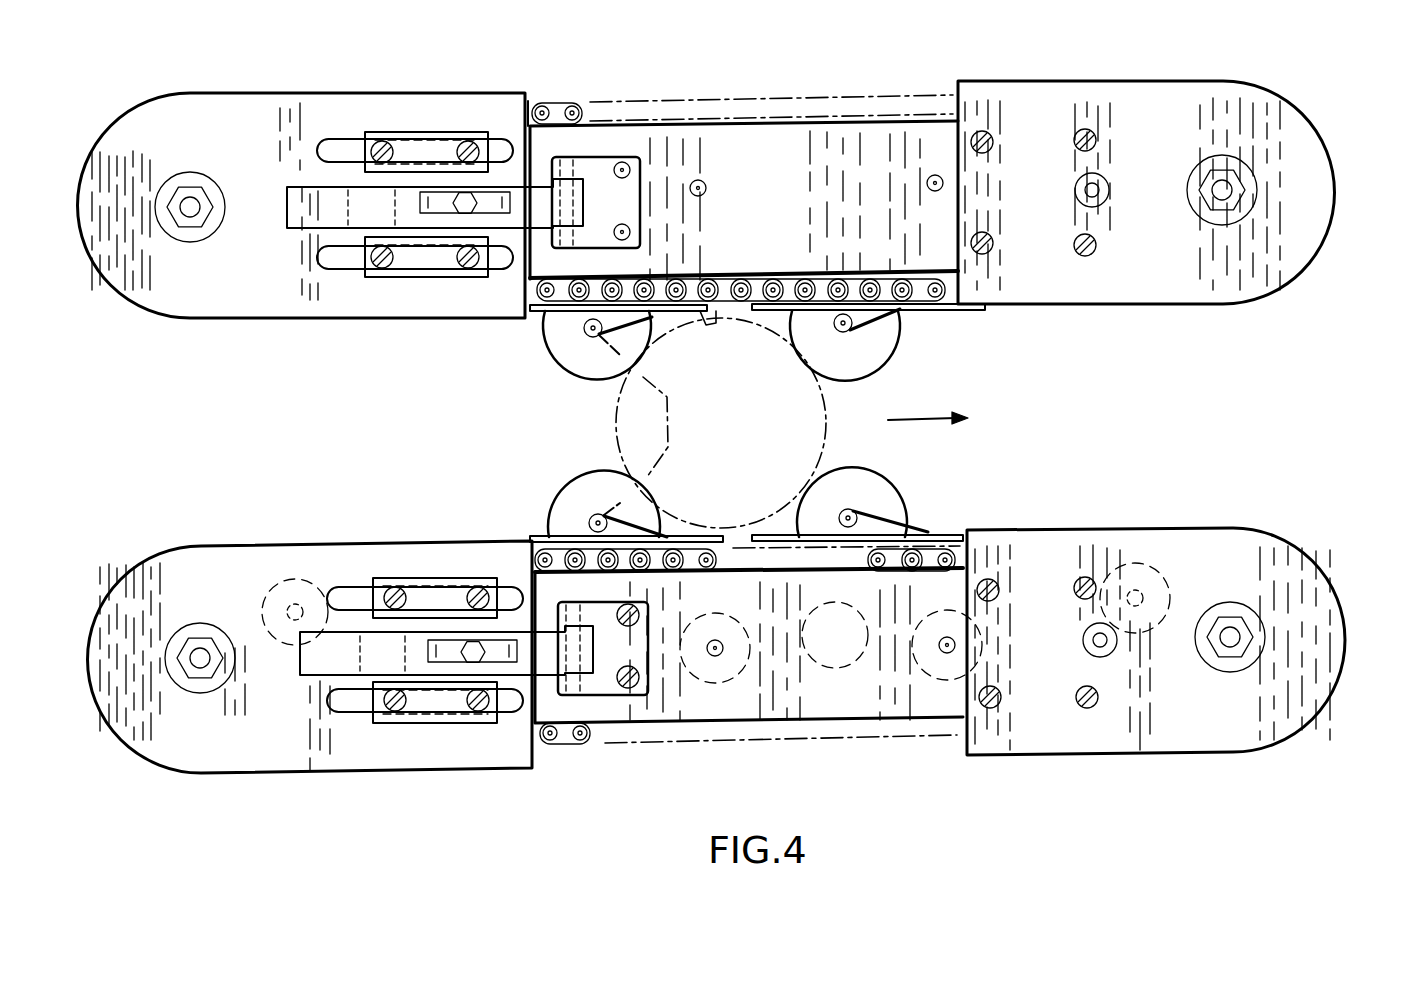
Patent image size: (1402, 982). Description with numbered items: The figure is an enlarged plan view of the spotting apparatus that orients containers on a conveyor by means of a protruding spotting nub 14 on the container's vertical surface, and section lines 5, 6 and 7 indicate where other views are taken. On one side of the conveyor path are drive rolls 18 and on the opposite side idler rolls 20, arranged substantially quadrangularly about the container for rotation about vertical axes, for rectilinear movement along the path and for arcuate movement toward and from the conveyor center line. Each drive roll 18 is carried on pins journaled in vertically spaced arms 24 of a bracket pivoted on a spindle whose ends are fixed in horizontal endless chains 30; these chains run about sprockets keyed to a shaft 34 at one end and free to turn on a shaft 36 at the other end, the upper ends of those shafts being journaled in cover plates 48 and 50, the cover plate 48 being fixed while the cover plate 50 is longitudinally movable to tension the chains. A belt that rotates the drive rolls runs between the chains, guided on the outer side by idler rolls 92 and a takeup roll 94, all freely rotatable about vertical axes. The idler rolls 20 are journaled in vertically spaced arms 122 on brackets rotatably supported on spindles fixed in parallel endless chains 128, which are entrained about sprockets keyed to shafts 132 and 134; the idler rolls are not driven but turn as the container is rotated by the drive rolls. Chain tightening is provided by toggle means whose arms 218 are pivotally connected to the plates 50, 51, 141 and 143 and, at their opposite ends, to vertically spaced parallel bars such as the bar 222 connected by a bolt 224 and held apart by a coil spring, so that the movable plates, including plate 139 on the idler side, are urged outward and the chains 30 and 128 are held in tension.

The section line 5- 5 is at (556, 72).
The section line 6- 6 is at (60, 640).
The section line 7- 7 is at (52, 194).
The spotting nub 14 is at (722, 322).
The drive rolls 18 is at (550, 482).
The idler rolls 20 is at (548, 368).
The arms 24 is at (850, 509).
The endless chains 30 is at (897, 567).
The shaft 34 is at (1228, 642).
The shaft 36 is at (203, 655).
The cover plate 48 is at (1038, 543).
The cover plate 50 is at (298, 548).
The plate 51 is at (632, 641).
The idler rolls 92 is at (706, 686).
The takeup roll 94 is at (830, 680).
The arms 122 is at (855, 326).
The endless chains 128 is at (850, 283).
The shaft 132 is at (1218, 189).
The shaft 134 is at (190, 202).
The upper right mounting plate 139 is at (1108, 97).
The plate 141 is at (237, 308).
The plate 143 is at (604, 172).
The arms 218 is at (377, 212).
The bar 222 is at (460, 224).
The bolt 224 is at (462, 195).